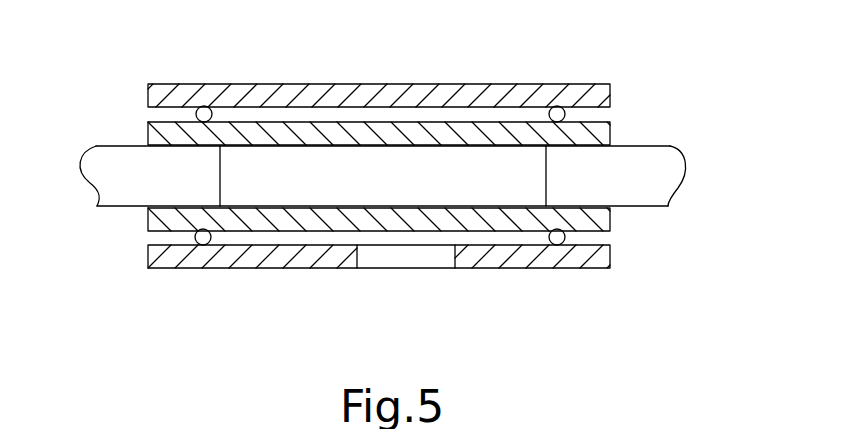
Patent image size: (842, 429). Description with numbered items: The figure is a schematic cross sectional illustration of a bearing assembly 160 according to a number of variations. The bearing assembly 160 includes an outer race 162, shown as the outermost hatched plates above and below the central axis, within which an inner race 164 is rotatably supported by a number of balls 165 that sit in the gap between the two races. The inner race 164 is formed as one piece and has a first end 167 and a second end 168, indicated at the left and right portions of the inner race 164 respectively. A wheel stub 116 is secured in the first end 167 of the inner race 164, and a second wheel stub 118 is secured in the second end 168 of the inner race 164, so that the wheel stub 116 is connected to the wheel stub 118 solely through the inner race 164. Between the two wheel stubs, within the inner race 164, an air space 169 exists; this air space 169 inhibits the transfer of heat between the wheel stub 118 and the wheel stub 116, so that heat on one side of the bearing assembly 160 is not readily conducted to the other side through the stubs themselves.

The bearing assembly 160 is at (647, 244).
The wheel stub 116 is at (133, 188).
The wheel stub 118 is at (622, 163).
The air space 169 is at (390, 183).
The first end 167 is at (148, 137).
The second end 168 is at (610, 133).
The inner race 164 is at (281, 223).
The outer race 162 is at (503, 258).
The balls 165 is at (200, 244).